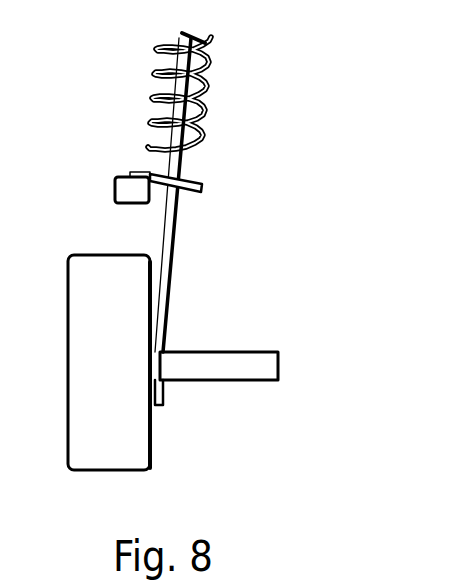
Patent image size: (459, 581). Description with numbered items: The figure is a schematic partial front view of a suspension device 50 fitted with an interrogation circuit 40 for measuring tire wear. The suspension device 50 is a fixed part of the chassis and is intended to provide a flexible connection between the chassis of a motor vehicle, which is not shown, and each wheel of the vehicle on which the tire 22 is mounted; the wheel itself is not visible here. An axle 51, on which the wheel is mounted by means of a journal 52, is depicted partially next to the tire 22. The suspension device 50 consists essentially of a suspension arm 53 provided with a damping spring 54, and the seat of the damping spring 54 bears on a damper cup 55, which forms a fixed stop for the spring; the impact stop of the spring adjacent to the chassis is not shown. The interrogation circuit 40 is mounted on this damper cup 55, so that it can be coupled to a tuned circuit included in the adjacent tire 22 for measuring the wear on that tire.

The tire 22 is at (152, 448).
The interrogation circuit 40 is at (118, 180).
The suspension device 50 is at (239, 114).
The axle 51 is at (220, 358).
The journal 52 is at (163, 393).
The suspension arm 53 is at (177, 237).
The damping spring 54 is at (207, 47).
The damper cup 55 is at (205, 188).